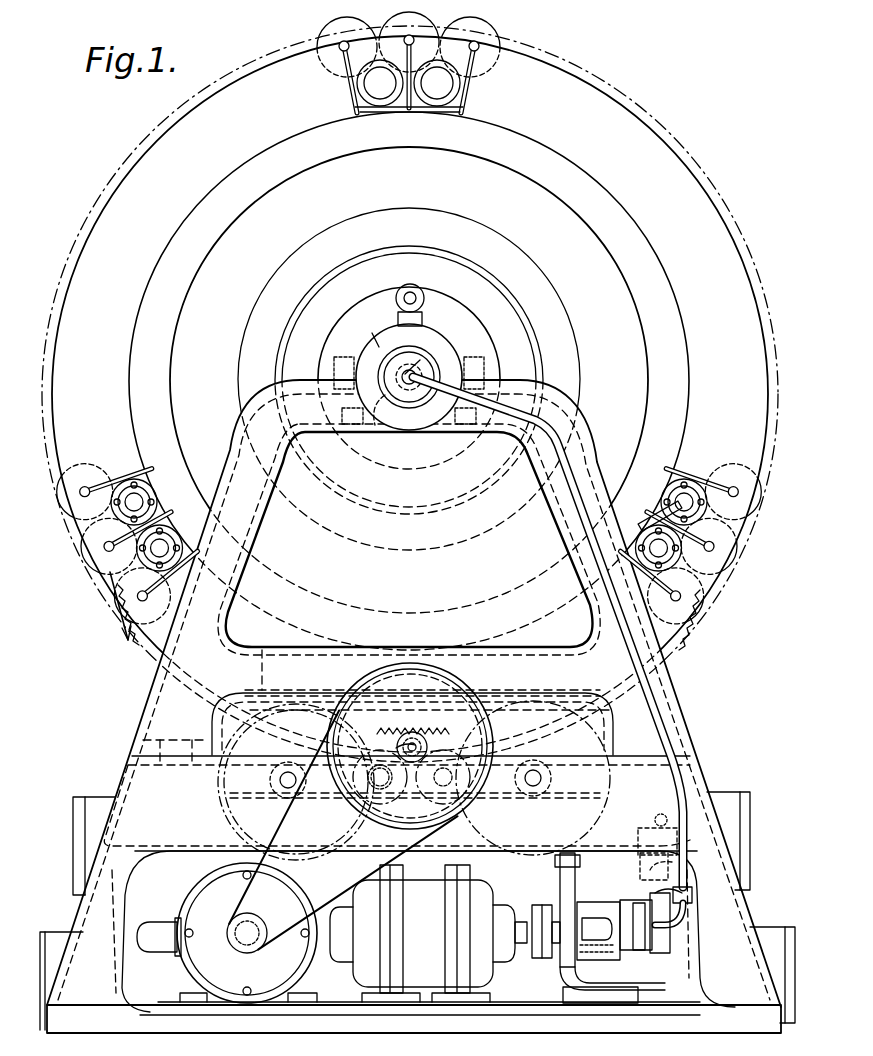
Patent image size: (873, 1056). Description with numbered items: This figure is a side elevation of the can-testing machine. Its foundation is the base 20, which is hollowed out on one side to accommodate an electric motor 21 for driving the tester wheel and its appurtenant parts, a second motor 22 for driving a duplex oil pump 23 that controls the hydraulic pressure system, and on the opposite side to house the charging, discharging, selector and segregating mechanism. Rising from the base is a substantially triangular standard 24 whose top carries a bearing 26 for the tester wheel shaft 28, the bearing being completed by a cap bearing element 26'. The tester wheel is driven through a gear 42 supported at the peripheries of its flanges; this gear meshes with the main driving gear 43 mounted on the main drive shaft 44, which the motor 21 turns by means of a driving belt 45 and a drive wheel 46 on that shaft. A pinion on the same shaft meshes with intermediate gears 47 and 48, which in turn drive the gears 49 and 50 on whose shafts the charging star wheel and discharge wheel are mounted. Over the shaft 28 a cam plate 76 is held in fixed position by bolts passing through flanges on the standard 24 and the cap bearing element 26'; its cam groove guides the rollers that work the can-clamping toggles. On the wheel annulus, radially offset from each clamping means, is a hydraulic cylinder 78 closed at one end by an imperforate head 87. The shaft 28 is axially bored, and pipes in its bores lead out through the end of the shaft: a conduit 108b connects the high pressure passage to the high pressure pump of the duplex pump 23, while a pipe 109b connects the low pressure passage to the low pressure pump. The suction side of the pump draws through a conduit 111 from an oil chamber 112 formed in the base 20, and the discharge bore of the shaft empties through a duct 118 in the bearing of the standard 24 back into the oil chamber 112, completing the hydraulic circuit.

The base 20 is at (735, 918).
The electric motor 21 is at (227, 933).
The second motor 22 is at (445, 933).
The duplex oil pump 23 is at (592, 902).
The standard 24 is at (660, 682).
The bearing 26 is at (409, 357).
The cap bearing element 26' is at (360, 331).
The tester wheel shaft 28 is at (422, 360).
The gear 42 is at (131, 614).
The main driving gear 43 is at (417, 735).
The main drive shaft 44 is at (430, 745).
The driving belt 45 is at (275, 865).
The drive wheel 46 is at (370, 760).
The intermediate gear 47 is at (368, 800).
The intermediate gear 48 is at (462, 800).
The gear 49 is at (240, 799).
The gear 50 is at (603, 785).
The cam plate 76 is at (410, 394).
The hydraulic cylinder 78 is at (712, 480).
The imperforate head 87 is at (690, 490).
The conduit 108b is at (673, 790).
The pipe 109b is at (688, 736).
The conduit 111 is at (560, 883).
The oil chamber 112 is at (400, 750).
The duct 118 is at (375, 427).